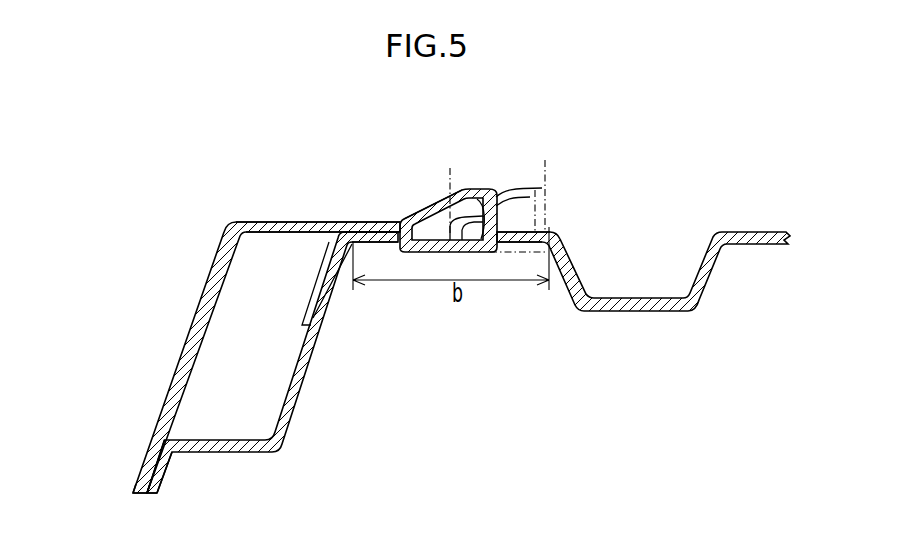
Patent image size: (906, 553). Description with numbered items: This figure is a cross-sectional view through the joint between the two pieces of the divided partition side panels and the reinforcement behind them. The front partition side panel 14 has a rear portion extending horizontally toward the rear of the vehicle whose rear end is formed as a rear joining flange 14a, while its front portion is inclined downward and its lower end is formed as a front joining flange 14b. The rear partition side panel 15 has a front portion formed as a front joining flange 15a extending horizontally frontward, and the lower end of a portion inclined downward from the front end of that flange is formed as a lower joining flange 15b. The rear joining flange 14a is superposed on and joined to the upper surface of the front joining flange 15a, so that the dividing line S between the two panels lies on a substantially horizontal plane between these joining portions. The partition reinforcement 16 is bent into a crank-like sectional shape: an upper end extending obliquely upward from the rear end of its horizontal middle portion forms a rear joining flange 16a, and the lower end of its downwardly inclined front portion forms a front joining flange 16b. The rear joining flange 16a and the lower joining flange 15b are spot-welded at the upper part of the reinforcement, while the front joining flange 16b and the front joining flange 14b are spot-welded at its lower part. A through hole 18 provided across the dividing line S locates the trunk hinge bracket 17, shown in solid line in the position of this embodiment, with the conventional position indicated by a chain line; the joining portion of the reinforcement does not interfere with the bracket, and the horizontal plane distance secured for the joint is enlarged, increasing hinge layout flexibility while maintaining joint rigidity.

The front partition side panel 14 is at (177, 335).
The rear joining flange 14a is at (364, 221).
The front joining flange 14b is at (134, 491).
The rear partition side panel 15 is at (675, 324).
The front joining flange 15a is at (517, 231).
The lower joining flange 15b is at (324, 290).
The partition reinforcement 16 is at (324, 386).
The rear joining flange 16a is at (339, 292).
The front joining flange 16b is at (155, 490).
The trunk hinge bracket 17 is at (445, 207).
The through hole 18 is at (480, 213).
The dividing line S is at (402, 216).